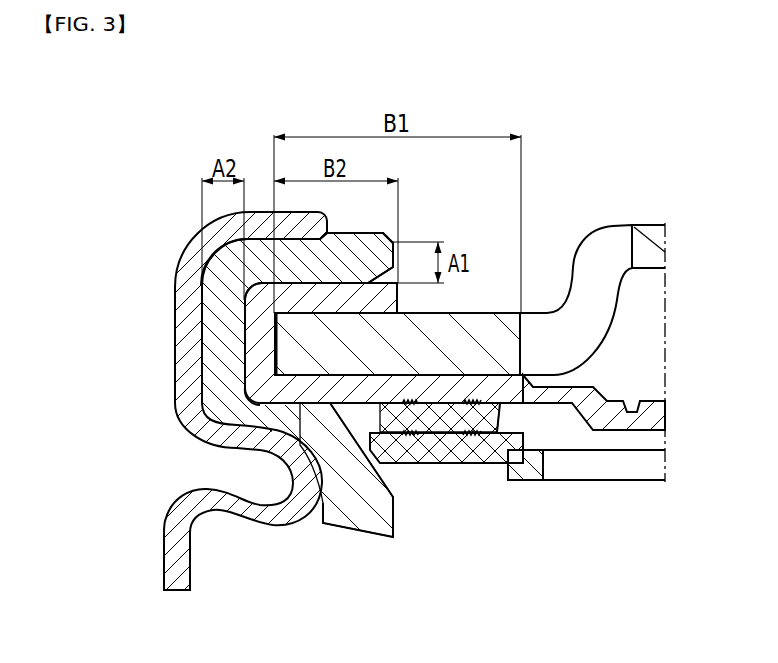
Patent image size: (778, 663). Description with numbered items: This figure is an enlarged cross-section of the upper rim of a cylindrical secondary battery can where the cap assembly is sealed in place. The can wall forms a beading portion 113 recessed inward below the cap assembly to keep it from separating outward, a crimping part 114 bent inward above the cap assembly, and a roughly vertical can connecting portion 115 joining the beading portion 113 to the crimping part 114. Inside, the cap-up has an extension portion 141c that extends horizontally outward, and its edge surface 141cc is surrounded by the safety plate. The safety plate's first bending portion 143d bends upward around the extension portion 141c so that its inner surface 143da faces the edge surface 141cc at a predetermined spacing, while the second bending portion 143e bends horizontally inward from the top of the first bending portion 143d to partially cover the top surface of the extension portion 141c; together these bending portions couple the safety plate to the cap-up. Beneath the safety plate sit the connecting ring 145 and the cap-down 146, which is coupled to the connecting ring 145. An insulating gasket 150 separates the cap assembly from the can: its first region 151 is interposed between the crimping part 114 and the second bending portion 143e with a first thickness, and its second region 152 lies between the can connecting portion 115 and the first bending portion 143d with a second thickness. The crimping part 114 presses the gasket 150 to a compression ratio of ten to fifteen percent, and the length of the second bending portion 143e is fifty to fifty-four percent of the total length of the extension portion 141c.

The beading portion 113 is at (223, 468).
The crimping part 114 is at (262, 212).
The can connecting portion 115 is at (187, 363).
The extension portion 141c is at (430, 340).
The edge surface 141cc is at (246, 392).
The first bending portion 143d is at (248, 353).
The inner surface 143da is at (268, 323).
The second bending portion 143e is at (362, 295).
The connecting ring 145 is at (488, 437).
The cap-down 146 is at (527, 482).
The insulating gasket 150 is at (87, 223).
The first region 151 is at (290, 265).
The second region 152 is at (217, 312).